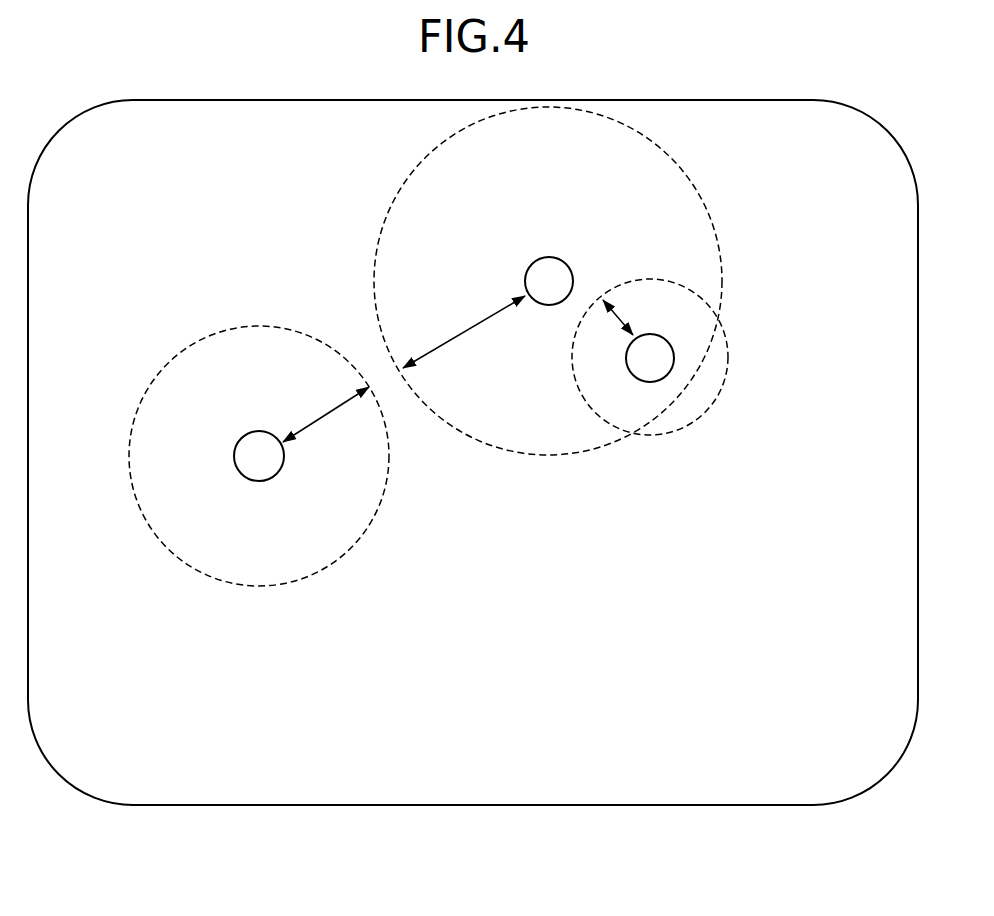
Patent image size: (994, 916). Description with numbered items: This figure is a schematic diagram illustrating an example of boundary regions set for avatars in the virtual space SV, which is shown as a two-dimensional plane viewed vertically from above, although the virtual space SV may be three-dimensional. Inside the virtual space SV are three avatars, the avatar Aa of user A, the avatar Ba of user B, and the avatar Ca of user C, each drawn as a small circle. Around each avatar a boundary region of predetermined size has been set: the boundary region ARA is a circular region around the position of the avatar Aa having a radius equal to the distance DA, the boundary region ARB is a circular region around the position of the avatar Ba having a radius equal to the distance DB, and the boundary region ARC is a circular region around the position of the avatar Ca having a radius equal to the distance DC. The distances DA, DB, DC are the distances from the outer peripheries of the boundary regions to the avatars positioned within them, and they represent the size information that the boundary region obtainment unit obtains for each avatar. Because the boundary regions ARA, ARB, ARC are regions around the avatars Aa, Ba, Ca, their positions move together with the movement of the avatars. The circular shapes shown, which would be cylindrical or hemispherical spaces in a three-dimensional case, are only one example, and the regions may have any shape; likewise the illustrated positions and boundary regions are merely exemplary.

The virtual space SV is at (489, 766).
The boundary region for avatar Aa ARA is at (710, 210).
The boundary region for avatar Ba ARB is at (317, 575).
The boundary region for avatar Ca ARC is at (727, 367).
The avatar of user A Aa is at (524, 259).
The avatar of user B Ba is at (242, 427).
The avatar of user C Ca is at (656, 396).
The distance DA is at (464, 332).
The distance DB is at (312, 414).
The distance DC is at (650, 316).